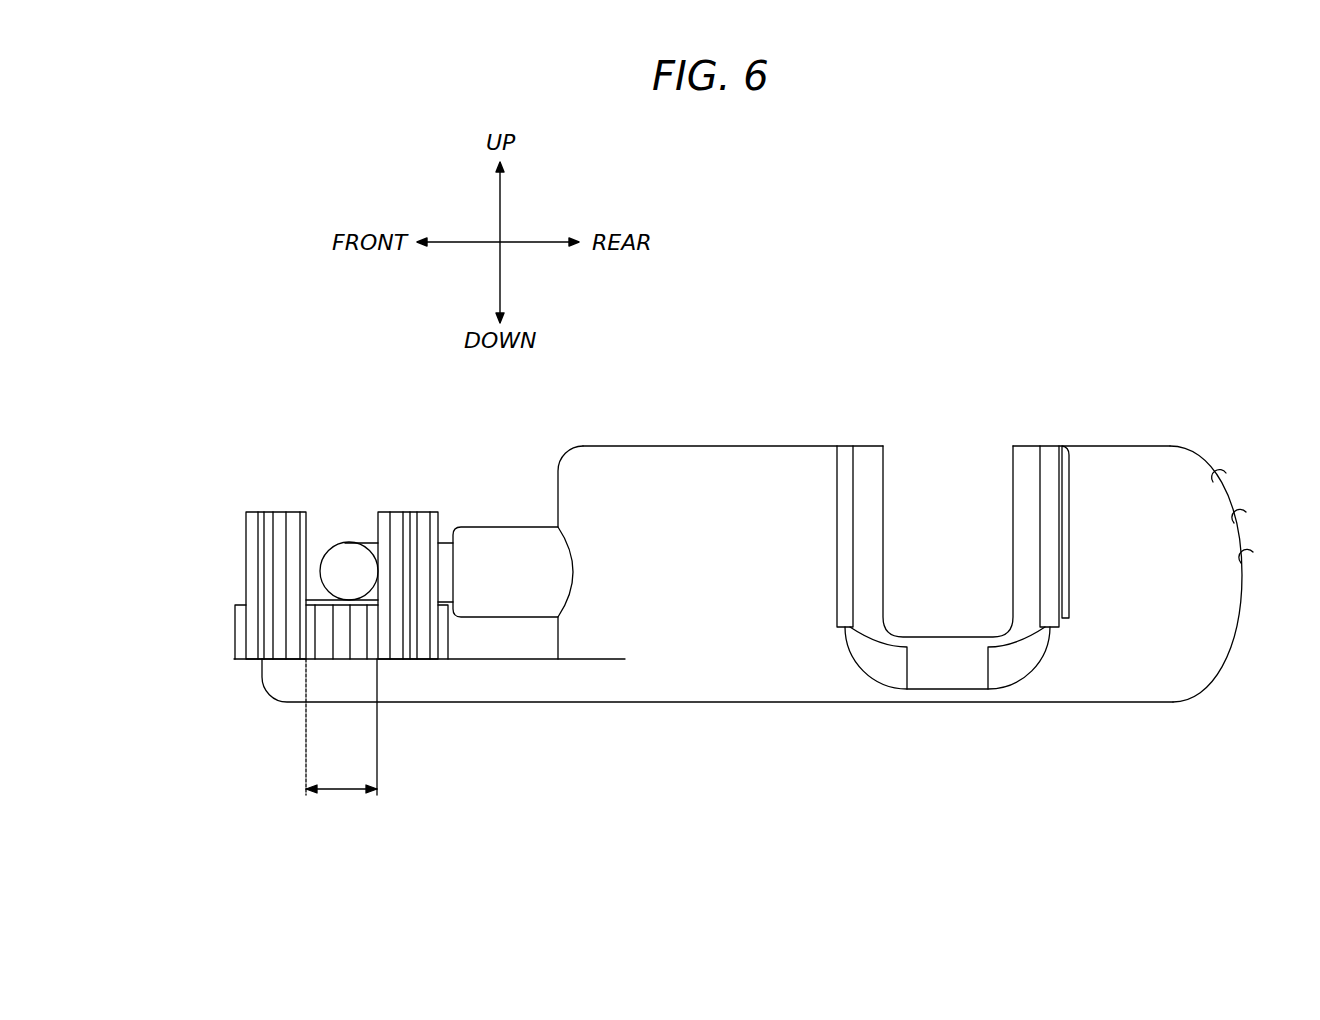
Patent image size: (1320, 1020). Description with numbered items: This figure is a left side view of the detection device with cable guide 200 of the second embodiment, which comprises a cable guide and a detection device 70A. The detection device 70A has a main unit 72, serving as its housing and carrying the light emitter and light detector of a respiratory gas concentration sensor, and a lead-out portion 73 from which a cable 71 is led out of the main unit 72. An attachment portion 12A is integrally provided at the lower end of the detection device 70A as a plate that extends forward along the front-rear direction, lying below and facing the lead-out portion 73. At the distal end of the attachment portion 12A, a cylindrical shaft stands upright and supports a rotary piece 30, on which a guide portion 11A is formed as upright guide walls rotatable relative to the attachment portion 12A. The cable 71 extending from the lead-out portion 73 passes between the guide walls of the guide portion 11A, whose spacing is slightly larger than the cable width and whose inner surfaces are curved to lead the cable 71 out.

The detection device with cable guide 200 is at (701, 496).
The detection device 70A is at (1126, 443).
The main unit 72 is at (736, 445).
The lead-out portion 73 is at (502, 543).
The rotary piece 30 is at (299, 556).
The guide portion 11A is at (308, 537).
The cable 71 is at (331, 576).
The attachment portion 12A is at (502, 687).